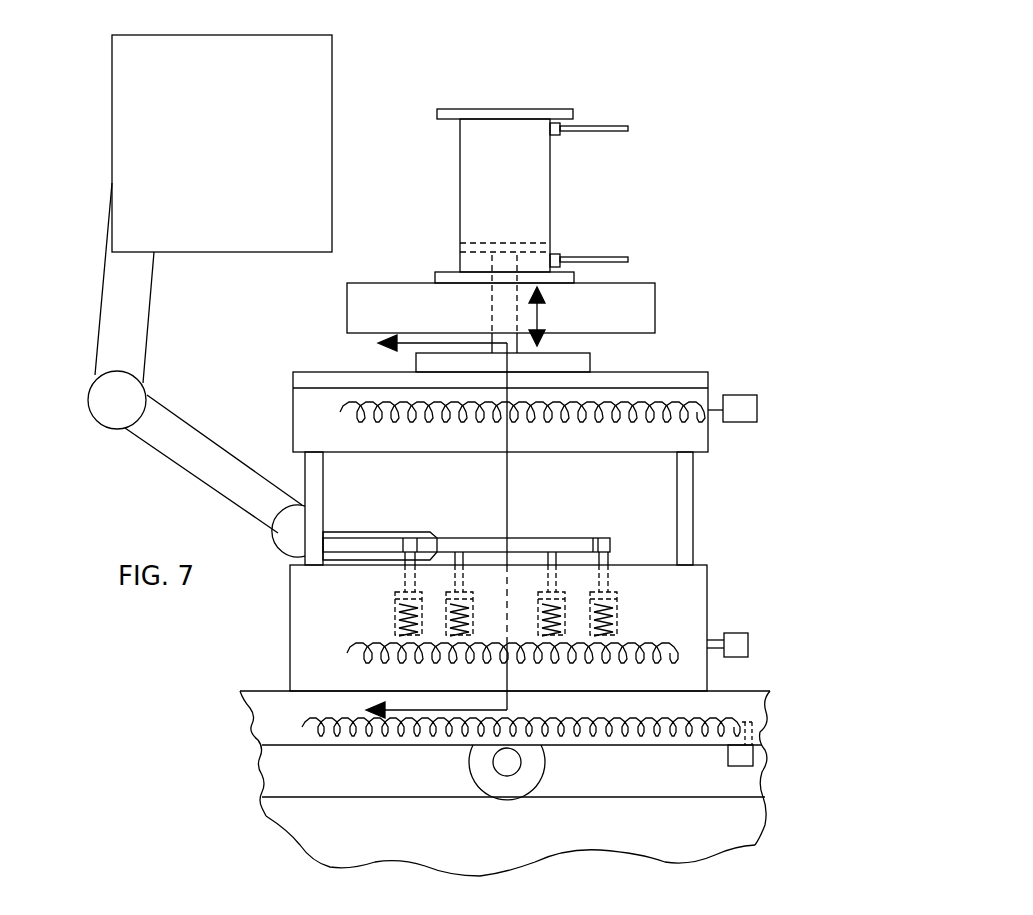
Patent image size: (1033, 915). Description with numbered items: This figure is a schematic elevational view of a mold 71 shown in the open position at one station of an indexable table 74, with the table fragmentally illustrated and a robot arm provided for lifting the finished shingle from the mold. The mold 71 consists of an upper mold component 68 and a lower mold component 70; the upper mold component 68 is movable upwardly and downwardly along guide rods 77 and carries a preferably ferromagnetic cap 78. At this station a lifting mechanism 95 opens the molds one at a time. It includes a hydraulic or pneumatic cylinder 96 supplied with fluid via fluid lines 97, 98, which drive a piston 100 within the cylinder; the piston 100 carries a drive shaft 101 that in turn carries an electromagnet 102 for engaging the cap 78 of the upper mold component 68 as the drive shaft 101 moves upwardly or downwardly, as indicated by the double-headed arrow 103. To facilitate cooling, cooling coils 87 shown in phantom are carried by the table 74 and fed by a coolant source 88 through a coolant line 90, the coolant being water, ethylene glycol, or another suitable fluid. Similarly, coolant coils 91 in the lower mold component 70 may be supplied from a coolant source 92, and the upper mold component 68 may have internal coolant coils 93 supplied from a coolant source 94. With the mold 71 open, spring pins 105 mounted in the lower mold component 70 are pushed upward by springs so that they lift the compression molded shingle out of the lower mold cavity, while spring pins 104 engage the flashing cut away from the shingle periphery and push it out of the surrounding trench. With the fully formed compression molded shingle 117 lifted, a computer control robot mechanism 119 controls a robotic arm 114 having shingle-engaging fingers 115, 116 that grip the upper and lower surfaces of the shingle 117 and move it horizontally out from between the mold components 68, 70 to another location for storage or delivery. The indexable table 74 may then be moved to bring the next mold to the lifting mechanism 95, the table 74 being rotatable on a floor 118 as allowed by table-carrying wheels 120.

The computer control robot mechanism 119 is at (310, 75).
The robotic arm 114 is at (112, 292).
The fluid line 97 is at (587, 123).
The hydraulic or pneumatic cylinder 96 is at (537, 185).
The piston 100 is at (535, 245).
The fluid line 98 is at (605, 255).
The drive shaft 101 is at (492, 267).
The lifting mechanism 95 is at (660, 292).
The double-headed arrow 103 is at (540, 322).
The electromagnet 102 is at (592, 362).
The cap 78 is at (697, 382).
The internal coolant coils 93 is at (690, 400).
The coolant source 94 is at (757, 414).
The upper mold component 68 is at (710, 437).
The guide rods 77 is at (312, 481).
The shingle-engaging finger 115 is at (337, 538).
The shingle-engaging finger 116 is at (383, 550).
The compression molded shingle 117 is at (512, 537).
The spring pins 105 is at (556, 553).
The spring pins 104 is at (606, 558).
The mold 71 is at (700, 537).
The lower mold component 70 is at (708, 582).
The coolant coils 91 is at (690, 633).
The coolant source 92 is at (748, 641).
The indexable table 74 is at (750, 692).
The cooling coils 87 is at (735, 706).
The coolant line 90 is at (757, 730).
The coolant source 88 is at (753, 760).
The table-carrying wheels 120 is at (477, 763).
The floor 118 is at (607, 797).